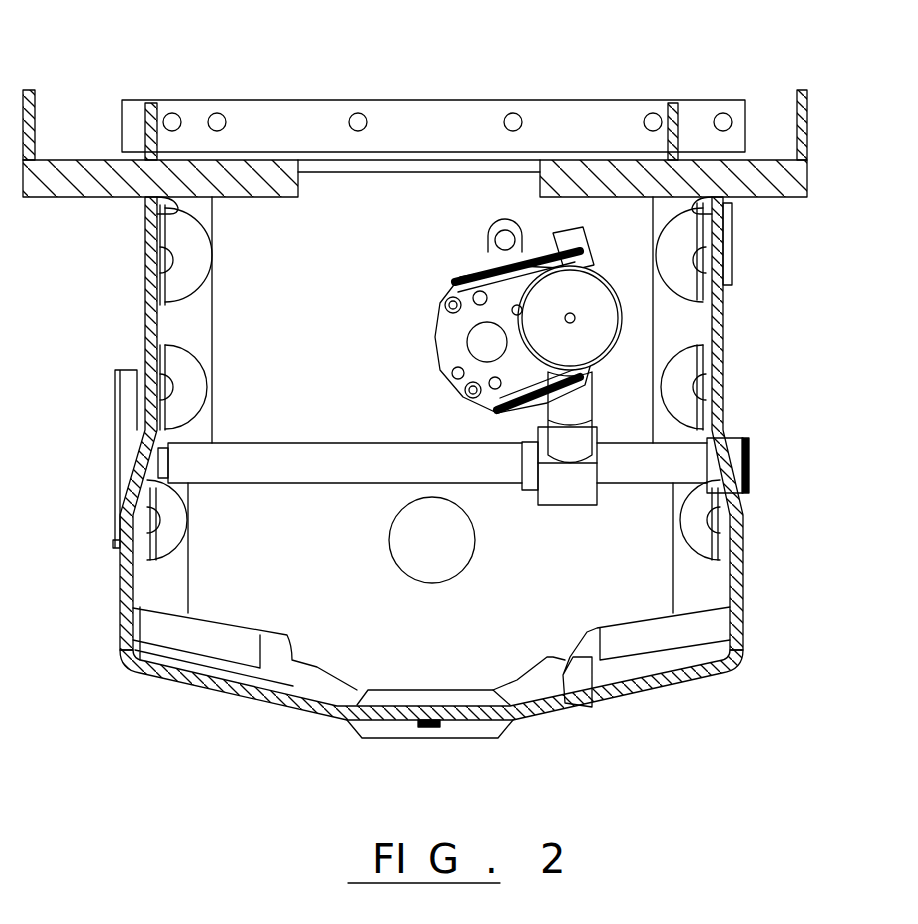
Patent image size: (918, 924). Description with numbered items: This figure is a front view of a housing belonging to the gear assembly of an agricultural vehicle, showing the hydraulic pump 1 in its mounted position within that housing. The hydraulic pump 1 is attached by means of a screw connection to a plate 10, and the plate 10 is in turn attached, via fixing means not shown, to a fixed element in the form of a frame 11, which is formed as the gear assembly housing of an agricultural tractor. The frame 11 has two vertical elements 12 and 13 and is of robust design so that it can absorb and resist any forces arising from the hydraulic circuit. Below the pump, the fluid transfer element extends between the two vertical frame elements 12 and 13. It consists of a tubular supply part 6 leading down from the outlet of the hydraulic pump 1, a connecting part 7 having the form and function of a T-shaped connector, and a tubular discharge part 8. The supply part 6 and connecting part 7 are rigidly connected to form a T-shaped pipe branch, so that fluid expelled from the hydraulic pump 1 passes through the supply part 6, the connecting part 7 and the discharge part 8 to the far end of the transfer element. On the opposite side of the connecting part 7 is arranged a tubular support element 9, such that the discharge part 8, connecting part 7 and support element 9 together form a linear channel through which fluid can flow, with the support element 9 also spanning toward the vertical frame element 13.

The hydraulic pump 1 is at (481, 276).
The supply part 6 is at (585, 398).
The connecting part 7 is at (600, 437).
The discharge part 8 is at (293, 470).
The support element 9 is at (685, 457).
The plate 10 is at (240, 323).
The frame 11 is at (332, 705).
The vertical element 12 is at (150, 325).
The vertical element 13 is at (716, 242).